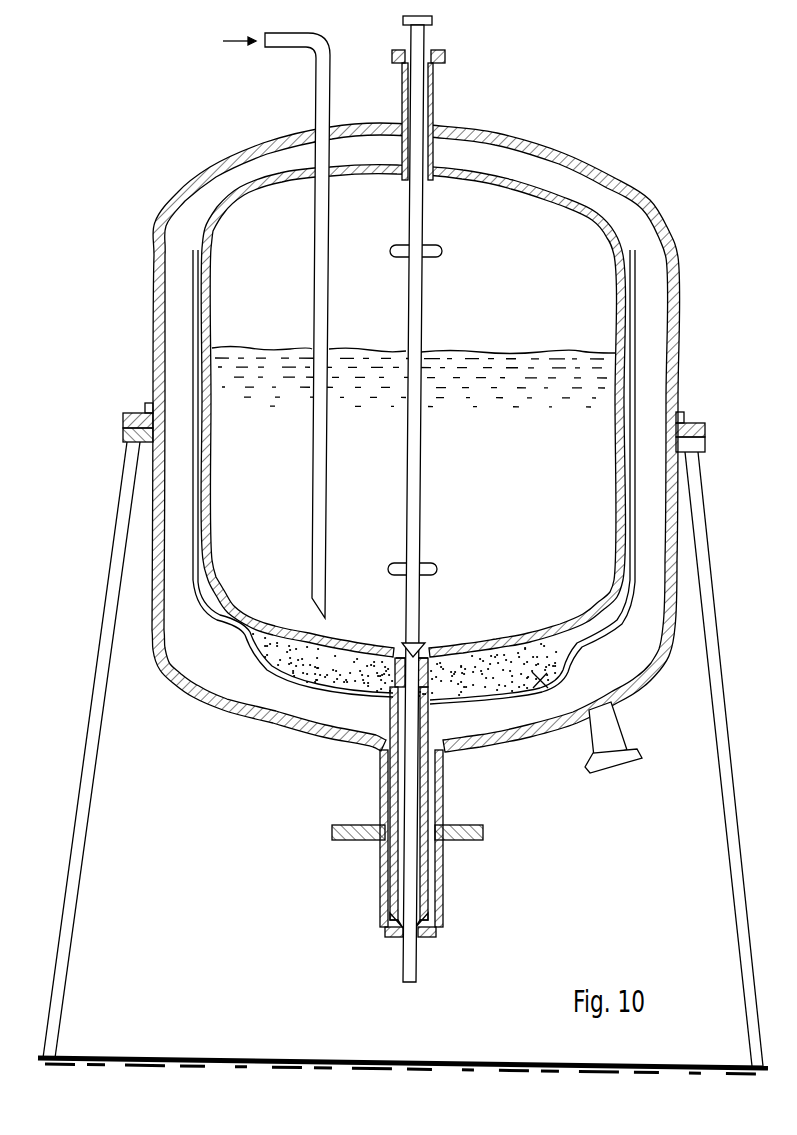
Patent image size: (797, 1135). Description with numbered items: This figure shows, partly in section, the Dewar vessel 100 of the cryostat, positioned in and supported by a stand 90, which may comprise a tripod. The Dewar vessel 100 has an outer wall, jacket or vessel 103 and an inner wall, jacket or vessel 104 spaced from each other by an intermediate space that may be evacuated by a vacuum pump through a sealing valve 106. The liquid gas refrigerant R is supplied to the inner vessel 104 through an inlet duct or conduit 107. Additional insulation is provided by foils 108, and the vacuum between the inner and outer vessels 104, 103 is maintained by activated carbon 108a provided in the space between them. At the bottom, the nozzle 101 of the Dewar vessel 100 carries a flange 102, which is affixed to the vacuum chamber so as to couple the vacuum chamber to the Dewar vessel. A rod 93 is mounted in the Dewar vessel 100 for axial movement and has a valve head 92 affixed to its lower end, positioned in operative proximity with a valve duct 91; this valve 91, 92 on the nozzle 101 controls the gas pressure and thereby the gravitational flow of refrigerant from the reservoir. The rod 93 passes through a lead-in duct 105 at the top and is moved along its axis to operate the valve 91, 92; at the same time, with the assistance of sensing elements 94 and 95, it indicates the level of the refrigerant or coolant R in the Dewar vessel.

The stand 90 is at (118, 551).
The valve duct 91 is at (442, 649).
The valve head 92 is at (420, 646).
The rod 93 is at (423, 310).
The sensing element 94 is at (437, 570).
The sensing element 95 is at (442, 251).
The Dewar vessel 100 is at (716, 309).
The nozzle 101 is at (473, 926).
The flange 102 is at (484, 835).
The outer wall, jacket or vessel 103 is at (621, 178).
The inner wall, jacket or vessel 104 is at (582, 206).
The lead-in duct 105 is at (433, 88).
The sealing valve 106 is at (618, 733).
The inlet duct or conduit 107 is at (315, 88).
The foils 108 is at (577, 650).
The activated carbon 108a is at (548, 688).
The liquid gas refrigerant R is at (524, 450).